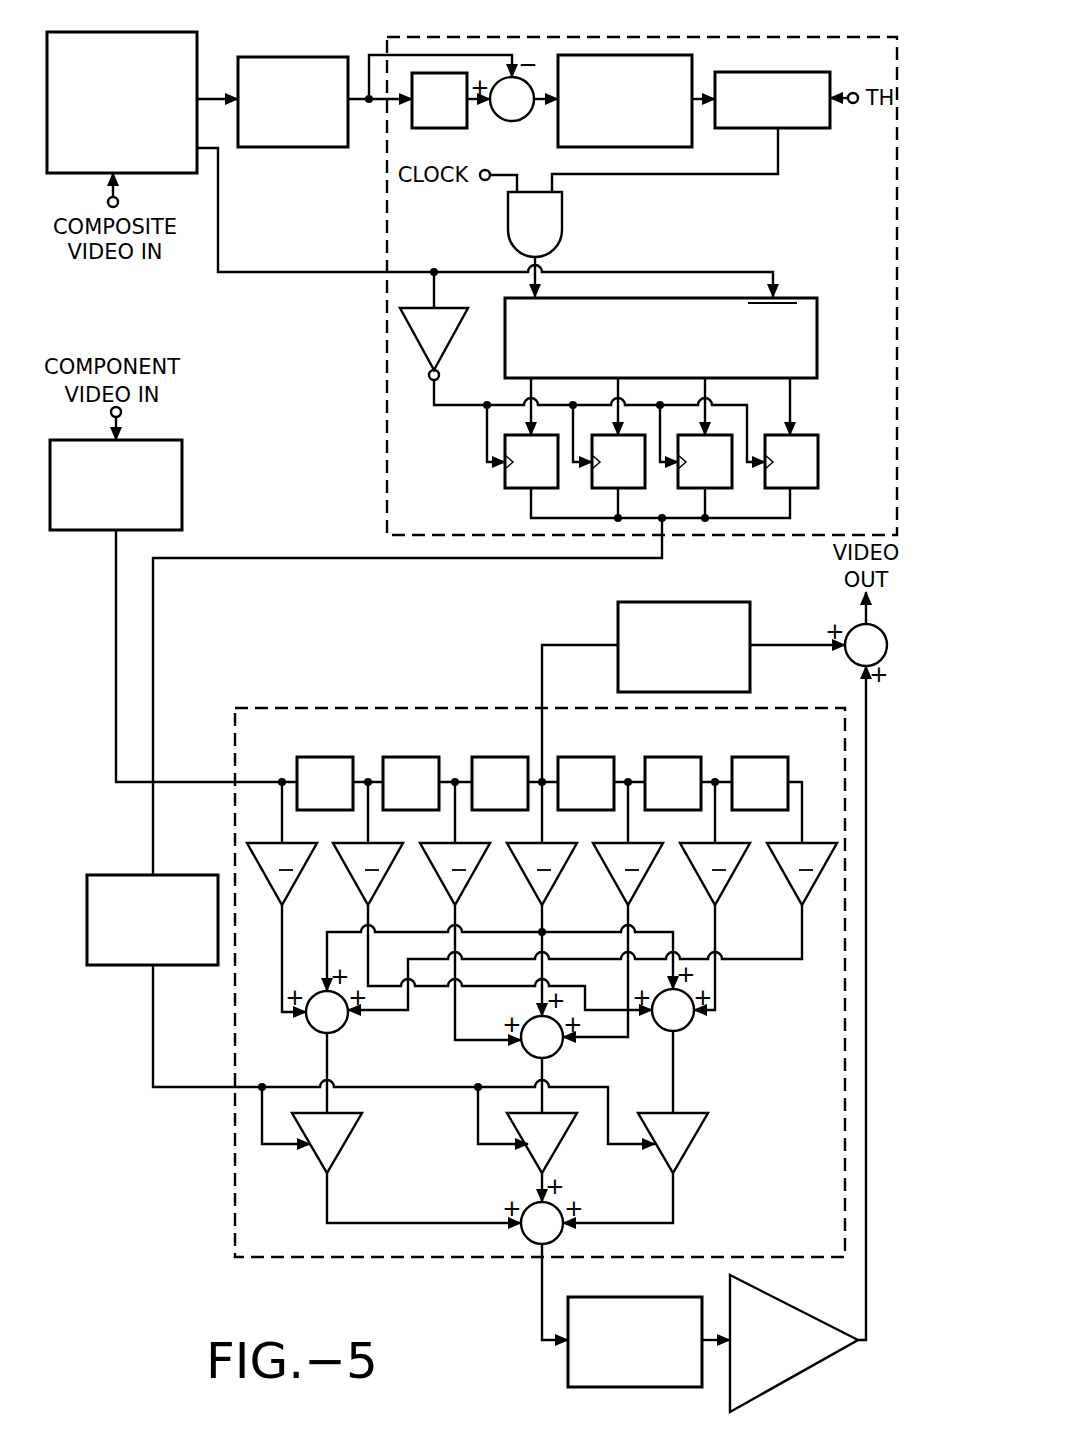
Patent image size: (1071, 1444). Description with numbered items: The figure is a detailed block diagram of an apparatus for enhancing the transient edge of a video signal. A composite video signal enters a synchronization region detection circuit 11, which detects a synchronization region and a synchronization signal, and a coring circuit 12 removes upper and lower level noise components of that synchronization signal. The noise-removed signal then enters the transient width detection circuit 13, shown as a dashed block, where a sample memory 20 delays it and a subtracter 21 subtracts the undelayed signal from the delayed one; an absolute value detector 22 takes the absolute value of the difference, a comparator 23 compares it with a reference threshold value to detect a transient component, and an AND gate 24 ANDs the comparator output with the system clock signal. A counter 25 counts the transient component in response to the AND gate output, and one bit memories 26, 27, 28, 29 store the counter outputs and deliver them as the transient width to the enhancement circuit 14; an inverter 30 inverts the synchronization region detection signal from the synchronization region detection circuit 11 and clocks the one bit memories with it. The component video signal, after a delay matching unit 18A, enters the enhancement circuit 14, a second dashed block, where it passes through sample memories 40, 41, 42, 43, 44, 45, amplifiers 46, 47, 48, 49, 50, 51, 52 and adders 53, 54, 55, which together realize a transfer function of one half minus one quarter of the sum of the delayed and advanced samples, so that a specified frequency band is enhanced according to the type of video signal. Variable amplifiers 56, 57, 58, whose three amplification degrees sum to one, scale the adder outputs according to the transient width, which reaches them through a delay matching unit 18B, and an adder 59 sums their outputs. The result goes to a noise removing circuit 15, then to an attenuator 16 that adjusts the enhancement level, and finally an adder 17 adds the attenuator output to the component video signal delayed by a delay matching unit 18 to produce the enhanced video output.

The synchronization region detection circuit 11 is at (143, 32).
The coring circuit 12 is at (282, 57).
The transient width detection circuit 13 is at (772, 37).
The enhancement circuit 14 is at (235, 1200).
The noise removing circuit 15 is at (568, 1375).
The attenuator 16 is at (798, 1372).
The adder 17 is at (850, 625).
The delay matching unit 18 is at (693, 602).
The delay matching unit 18A is at (182, 482).
The delay matching unit 18B is at (138, 875).
The sample memory 20 is at (437, 128).
The subtracter 21 is at (512, 121).
The absolute value detector 22 is at (680, 55).
The comparator 23 is at (777, 72).
The AND gate 24 is at (562, 218).
The counter 25 is at (803, 297).
The one bit memory 26 is at (520, 488).
The one bit memory 27 is at (627, 488).
The one bit memory 28 is at (715, 488).
The one bit memory 29 is at (798, 488).
The inverter 30 is at (448, 342).
The sample memory 40 is at (318, 757).
The sample memory 41 is at (405, 757).
The sample memory 42 is at (493, 757).
The sample memory 43 is at (582, 757).
The sample memory 44 is at (673, 757).
The sample memory 45 is at (755, 757).
The amplifier 46 is at (298, 878).
The amplifier 47 is at (384, 878).
The amplifier 48 is at (471, 878).
The amplifier 49 is at (560, 878).
The amplifier 50 is at (643, 878).
The amplifier 51 is at (727, 878).
The amplifier 52 is at (786, 884).
The adder 53 is at (338, 1033).
The adder 54 is at (558, 1052).
The adder 55 is at (683, 1033).
The variable amplifier 56 is at (345, 1145).
The variable amplifier 57 is at (528, 1158).
The variable amplifier 58 is at (693, 1145).
The adder 59 is at (560, 1205).